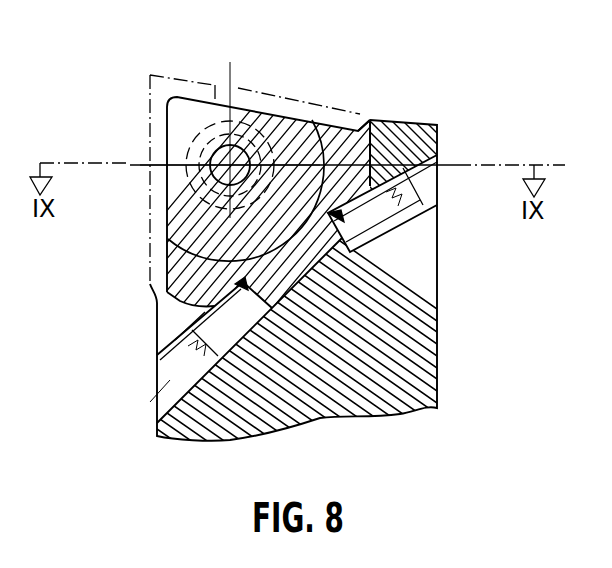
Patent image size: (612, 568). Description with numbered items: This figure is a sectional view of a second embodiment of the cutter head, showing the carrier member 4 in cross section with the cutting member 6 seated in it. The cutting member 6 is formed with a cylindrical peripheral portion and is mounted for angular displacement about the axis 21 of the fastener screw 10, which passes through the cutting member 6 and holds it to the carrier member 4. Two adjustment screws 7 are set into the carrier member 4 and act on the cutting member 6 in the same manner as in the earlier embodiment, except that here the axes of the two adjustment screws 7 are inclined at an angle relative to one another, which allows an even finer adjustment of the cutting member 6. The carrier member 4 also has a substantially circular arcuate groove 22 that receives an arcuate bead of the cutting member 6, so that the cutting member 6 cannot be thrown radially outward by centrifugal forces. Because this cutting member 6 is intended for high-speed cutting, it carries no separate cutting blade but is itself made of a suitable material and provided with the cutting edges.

The carrier member 4 is at (393, 340).
The cutting member 6 is at (162, 295).
The adjustment screws 7 is at (192, 332).
The fastener screw 10 is at (248, 112).
The axis 21 is at (230, 165).
The arcuate groove 22 is at (363, 120).